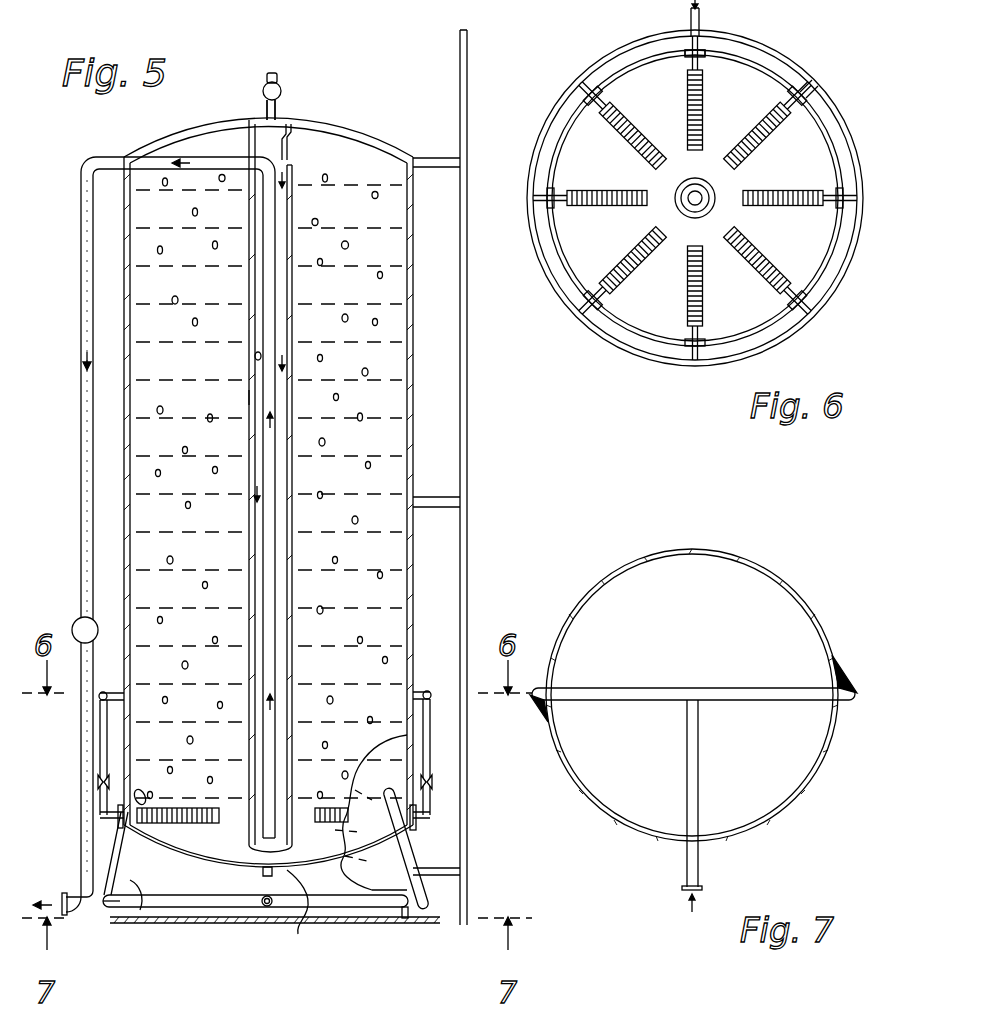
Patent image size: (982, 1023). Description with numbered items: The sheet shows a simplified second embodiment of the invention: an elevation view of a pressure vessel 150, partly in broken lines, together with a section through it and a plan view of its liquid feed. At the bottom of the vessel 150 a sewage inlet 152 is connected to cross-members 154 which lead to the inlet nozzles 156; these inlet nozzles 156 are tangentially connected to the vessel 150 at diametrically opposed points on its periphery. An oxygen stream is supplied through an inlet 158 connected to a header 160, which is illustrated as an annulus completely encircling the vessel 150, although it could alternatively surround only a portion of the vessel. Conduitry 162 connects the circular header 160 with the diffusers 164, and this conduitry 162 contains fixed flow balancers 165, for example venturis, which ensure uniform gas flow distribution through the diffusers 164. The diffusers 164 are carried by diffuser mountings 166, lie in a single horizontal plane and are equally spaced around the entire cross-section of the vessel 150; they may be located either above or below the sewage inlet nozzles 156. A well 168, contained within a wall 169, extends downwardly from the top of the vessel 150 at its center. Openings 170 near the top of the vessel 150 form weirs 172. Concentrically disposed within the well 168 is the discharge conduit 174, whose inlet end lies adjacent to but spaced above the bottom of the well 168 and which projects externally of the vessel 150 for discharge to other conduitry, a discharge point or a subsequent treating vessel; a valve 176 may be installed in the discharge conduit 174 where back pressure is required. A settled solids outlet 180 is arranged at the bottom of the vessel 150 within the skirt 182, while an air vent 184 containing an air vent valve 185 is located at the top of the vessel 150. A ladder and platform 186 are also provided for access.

In FIG. 5, the pressure vessel 150 is at (124, 303).
In FIG. 7, the pressure vessel 150 is at (688, 549).
In FIG. 5, the sewage inlet 152 is at (266, 907).
In FIG. 7, the sewage inlet 152 is at (699, 856).
In FIG. 7, the cross-members 154 is at (725, 687).
In FIG. 5, the inlet nozzles 156 is at (114, 870).
In FIG. 7, the inlet nozzles 156 is at (840, 668).
In FIG. 6, the inlet 158 is at (705, 8).
In FIG. 5, the header 160 is at (104, 692).
In FIG. 6, the header 160 is at (827, 90).
In FIG. 5, the conduitry 162 is at (99, 713).
In FIG. 5, the diffusers 164 is at (200, 824).
In FIG. 6, the diffusers 164 is at (733, 163).
In FIG. 5, the fixed flow balancers 165 is at (97, 783).
In FIG. 5, the diffuser mountings 166 is at (420, 826).
In FIG. 6, the diffuser mountings 166 is at (806, 100).
In FIG. 5, the well 168 is at (254, 356).
In FIG. 6, the well 168 is at (718, 208).
In FIG. 5, the wall 169 is at (252, 397).
In FIG. 5, the openings 170 is at (290, 160).
In FIG. 5, the weirs 172 is at (293, 166).
In FIG. 5, the discharge conduit 174 is at (274, 292).
In FIG. 5, the valve 176 is at (75, 620).
In FIG. 5, the settled solids outlet 180 is at (298, 934).
In FIG. 5, the skirt 182 is at (135, 923).
In FIG. 5, the air vent 184 is at (279, 76).
In FIG. 5, the air vent valve 185 is at (264, 98).
In FIG. 5, the ladder and platform 186 is at (458, 91).